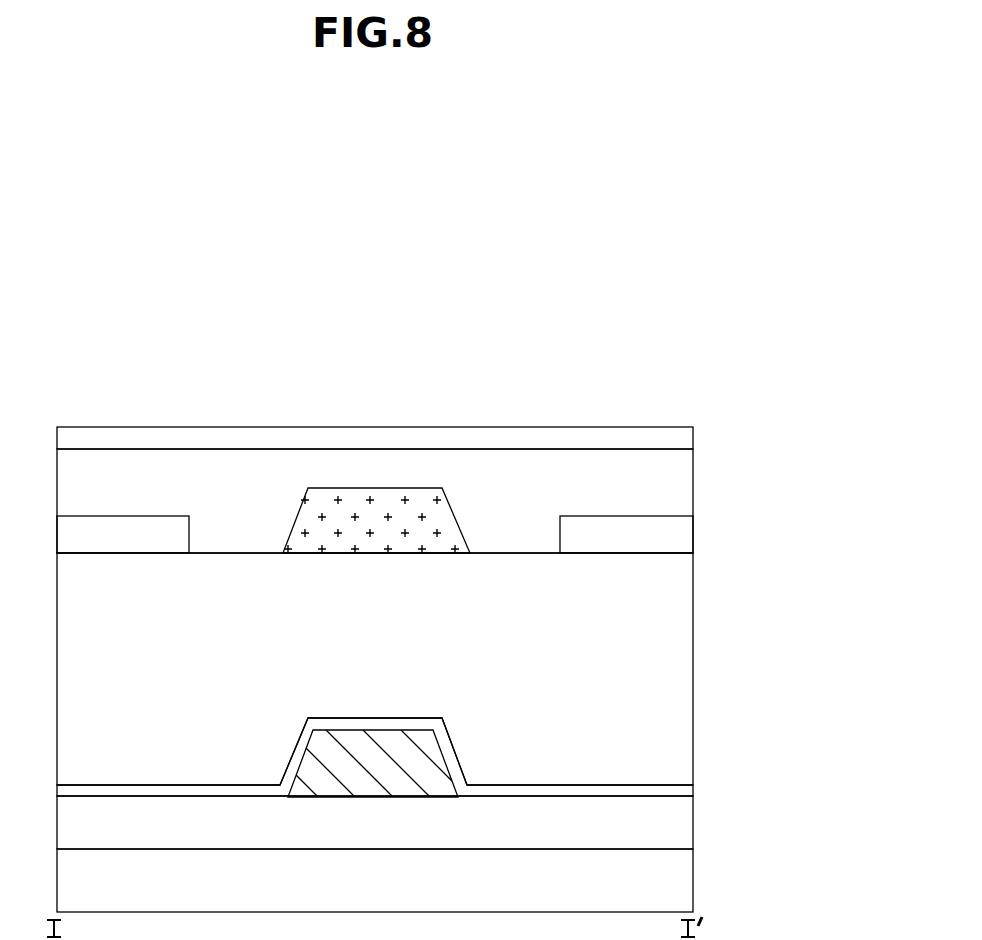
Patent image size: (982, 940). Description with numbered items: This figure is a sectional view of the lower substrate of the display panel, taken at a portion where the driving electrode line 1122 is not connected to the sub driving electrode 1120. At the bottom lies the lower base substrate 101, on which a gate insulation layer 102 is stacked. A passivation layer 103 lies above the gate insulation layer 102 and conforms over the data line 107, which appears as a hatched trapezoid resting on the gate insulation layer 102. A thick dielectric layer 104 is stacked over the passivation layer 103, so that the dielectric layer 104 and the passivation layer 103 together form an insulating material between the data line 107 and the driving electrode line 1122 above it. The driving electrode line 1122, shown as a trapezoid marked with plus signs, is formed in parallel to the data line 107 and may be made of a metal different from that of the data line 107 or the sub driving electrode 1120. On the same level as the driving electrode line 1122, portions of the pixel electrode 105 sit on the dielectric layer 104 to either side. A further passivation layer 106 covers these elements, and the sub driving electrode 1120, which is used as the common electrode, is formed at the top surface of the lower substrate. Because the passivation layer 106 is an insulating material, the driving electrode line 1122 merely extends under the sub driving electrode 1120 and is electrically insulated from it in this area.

The lower base substrate 101 is at (672, 888).
The gate insulation layer 102 is at (670, 835).
The passivation layer 103 is at (693, 787).
The dielectric layer 104 is at (676, 670).
The pixel electrode 105 is at (672, 540).
The passivation layer 106 is at (672, 494).
The data line 107 is at (422, 768).
The sub driving electrode 1120 is at (676, 444).
The driving electrode line 1122 is at (385, 488).